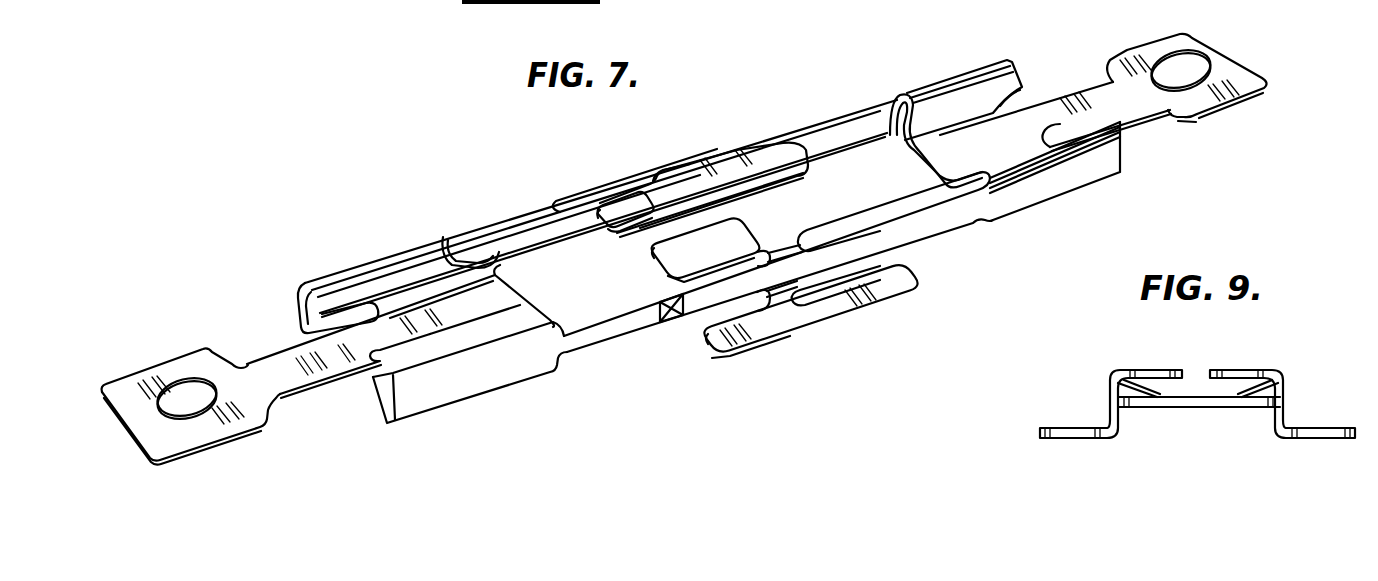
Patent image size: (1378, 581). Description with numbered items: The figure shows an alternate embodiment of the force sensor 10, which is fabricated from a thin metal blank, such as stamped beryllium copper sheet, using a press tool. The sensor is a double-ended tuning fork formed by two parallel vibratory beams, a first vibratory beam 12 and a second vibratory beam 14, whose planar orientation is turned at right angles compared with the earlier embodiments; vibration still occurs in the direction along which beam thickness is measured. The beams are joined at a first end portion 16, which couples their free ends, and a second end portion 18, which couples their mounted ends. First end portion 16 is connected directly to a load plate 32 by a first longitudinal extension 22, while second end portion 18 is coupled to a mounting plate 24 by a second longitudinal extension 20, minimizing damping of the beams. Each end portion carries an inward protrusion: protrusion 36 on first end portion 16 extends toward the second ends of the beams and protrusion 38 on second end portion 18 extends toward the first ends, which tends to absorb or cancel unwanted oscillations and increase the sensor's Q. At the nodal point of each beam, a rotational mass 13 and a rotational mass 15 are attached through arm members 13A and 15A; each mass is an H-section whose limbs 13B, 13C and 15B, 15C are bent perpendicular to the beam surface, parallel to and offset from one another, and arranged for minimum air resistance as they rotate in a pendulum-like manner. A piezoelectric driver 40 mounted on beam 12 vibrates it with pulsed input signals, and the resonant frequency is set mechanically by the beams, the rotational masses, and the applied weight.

In FIG. 7, the force sensor 10 is at (557, 368).
In FIG. 7, the first vibratory beam 12 is at (570, 338).
In FIG. 7, the rotational mass 13 is at (837, 327).
In FIG. 7, the arm member 13A is at (787, 297).
In FIG. 7, the limb 13B is at (877, 283).
In FIG. 9, the limb 13B is at (1300, 440).
In FIG. 7, the limb 13C is at (662, 260).
In FIG. 9, the limb 13C is at (1260, 366).
In FIG. 7, the second vibratory beam 14 is at (500, 243).
In FIG. 7, the rotational mass 15 is at (717, 149).
In FIG. 7, the arm member 15A is at (672, 174).
In FIG. 7, the limb 15B is at (603, 188).
In FIG. 9, the limb 15B is at (1060, 437).
In FIG. 7, the limb 15C is at (634, 222).
In FIG. 9, the limb 15C is at (1148, 366).
In FIG. 7, the first end portion 16 is at (1037, 117).
In FIG. 7, the second end portion 18 is at (450, 327).
In FIG. 7, the second longitudinal extension 20 is at (330, 355).
In FIG. 7, the first longitudinal extension 22 is at (1095, 93).
In FIG. 7, the mounting plate 24 is at (200, 365).
In FIG. 9, the mounting plate 24 is at (1190, 405).
In FIG. 7, the load plate 32 is at (1150, 52).
In FIG. 7, the protrusion 36 is at (930, 155).
In FIG. 7, the protrusion 38 is at (507, 307).
In FIG. 7, the piezoelectric driver 40 is at (672, 322).